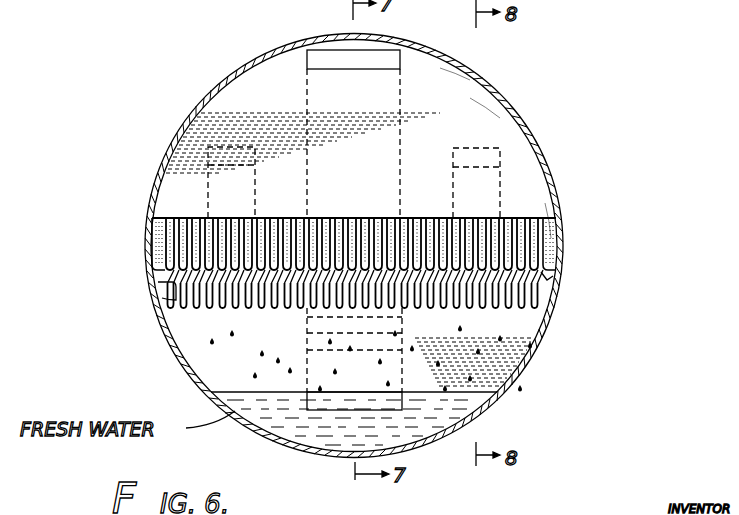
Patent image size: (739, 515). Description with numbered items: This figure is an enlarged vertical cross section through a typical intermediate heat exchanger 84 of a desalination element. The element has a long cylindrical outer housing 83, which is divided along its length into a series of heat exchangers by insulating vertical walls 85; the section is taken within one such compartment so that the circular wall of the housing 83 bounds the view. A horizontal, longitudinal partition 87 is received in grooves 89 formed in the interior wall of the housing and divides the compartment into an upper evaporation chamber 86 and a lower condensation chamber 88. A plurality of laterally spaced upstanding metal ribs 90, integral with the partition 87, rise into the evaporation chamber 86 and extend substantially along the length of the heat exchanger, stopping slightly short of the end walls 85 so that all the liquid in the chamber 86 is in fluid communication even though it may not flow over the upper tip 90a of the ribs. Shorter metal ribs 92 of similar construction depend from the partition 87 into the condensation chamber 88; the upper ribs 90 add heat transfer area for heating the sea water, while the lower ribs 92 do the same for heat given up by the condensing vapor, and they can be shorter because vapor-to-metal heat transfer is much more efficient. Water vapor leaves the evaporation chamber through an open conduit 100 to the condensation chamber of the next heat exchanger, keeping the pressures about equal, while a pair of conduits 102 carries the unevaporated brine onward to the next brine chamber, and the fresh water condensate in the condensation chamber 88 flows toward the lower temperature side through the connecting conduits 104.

The cylindrical outer housing 83 is at (535, 139).
The heat exchanger 84 is at (565, 223).
The insulating vertical wall 85 is at (450, 78).
The upper evaporation chamber 86 is at (480, 113).
The horizontal longitudinal partition 87 is at (258, 274).
The lower condensation chamber 88 is at (516, 324).
The grooves 89 is at (556, 279).
The upstanding metal ribs 90 is at (168, 222).
The upper tip of the ribs 90a is at (543, 218).
The depending metal ribs 92 is at (172, 304).
The open conduit 100 is at (326, 57).
The conduits 102 is at (248, 222).
The connecting conduits 104 is at (360, 396).